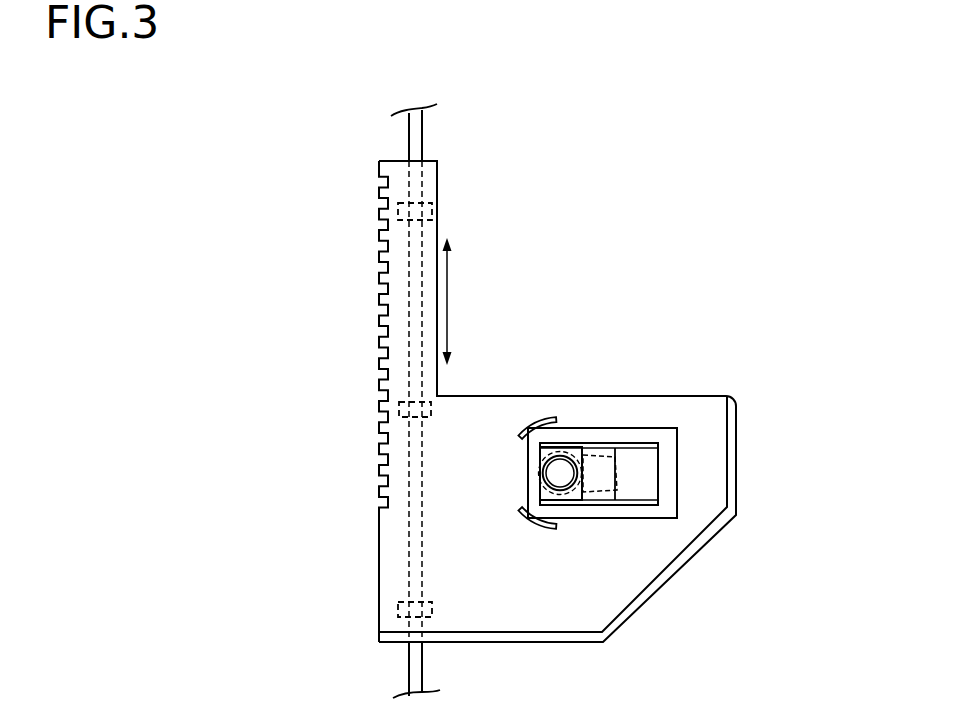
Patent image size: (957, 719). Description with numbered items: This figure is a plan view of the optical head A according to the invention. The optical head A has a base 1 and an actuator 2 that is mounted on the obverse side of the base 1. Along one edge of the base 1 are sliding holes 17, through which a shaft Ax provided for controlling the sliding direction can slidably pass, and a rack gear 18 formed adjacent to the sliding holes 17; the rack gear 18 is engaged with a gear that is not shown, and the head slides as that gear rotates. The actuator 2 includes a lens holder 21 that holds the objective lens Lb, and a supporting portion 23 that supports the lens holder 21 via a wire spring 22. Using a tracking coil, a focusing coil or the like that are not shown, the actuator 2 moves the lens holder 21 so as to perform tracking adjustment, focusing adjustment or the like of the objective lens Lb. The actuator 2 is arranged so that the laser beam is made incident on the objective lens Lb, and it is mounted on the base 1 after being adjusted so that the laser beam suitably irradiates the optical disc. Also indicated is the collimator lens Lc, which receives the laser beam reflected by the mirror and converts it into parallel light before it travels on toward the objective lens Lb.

The base 1 is at (488, 425).
The actuator 2 is at (620, 435).
The sliding holes 17 is at (432, 213).
The rack gear 18 is at (378, 363).
The lens holder 21 is at (575, 500).
The wire spring 22 is at (602, 505).
The supporting portion 23 is at (648, 485).
The optical head A is at (243, 153).
The shaft Ax is at (417, 268).
The objective lens Lb is at (560, 478).
The collimator lens Lc is at (532, 487).